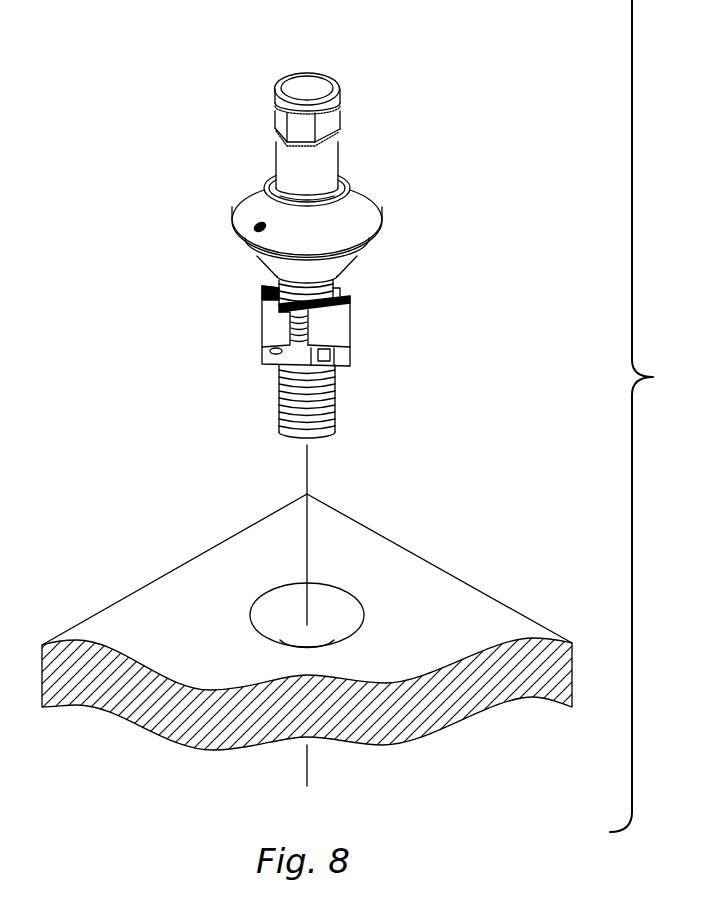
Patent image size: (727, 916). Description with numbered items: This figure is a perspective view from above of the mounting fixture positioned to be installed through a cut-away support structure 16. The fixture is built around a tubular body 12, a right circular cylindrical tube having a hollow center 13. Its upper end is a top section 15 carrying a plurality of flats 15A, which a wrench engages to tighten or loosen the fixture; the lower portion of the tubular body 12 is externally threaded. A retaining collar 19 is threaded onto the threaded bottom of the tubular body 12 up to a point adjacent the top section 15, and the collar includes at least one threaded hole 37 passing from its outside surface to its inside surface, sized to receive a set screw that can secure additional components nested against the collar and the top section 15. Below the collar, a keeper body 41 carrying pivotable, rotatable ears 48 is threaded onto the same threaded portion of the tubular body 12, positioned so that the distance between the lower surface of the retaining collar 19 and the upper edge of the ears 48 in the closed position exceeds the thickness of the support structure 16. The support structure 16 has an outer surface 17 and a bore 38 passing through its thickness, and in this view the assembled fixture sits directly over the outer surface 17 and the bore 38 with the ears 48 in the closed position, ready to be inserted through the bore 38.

The tubular body 12 is at (342, 152).
The hollow center 13 is at (307, 88).
The top section 15 is at (278, 114).
The flats 15A is at (327, 123).
The support structure 16 is at (487, 595).
The outer surface 17 is at (155, 607).
The retaining collar 19 is at (382, 222).
The threaded hole 37 is at (256, 226).
The bore 38 is at (330, 613).
The keeper body 41 is at (271, 359).
The ears 48 is at (262, 311).